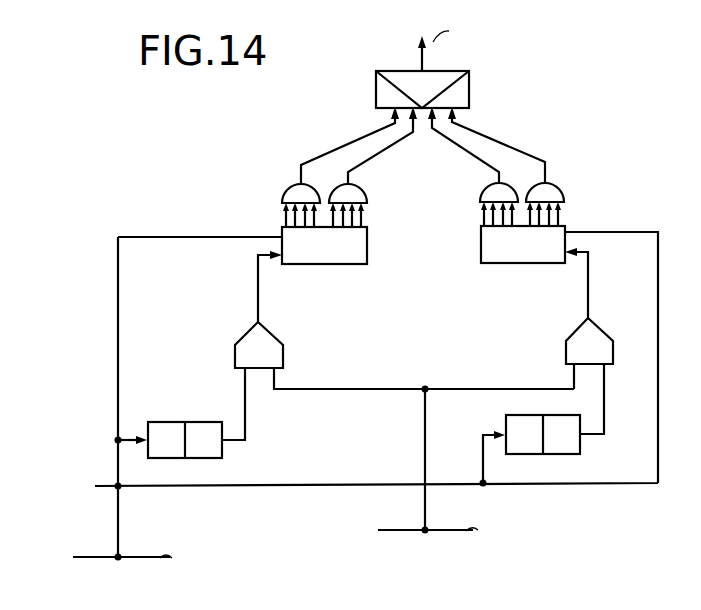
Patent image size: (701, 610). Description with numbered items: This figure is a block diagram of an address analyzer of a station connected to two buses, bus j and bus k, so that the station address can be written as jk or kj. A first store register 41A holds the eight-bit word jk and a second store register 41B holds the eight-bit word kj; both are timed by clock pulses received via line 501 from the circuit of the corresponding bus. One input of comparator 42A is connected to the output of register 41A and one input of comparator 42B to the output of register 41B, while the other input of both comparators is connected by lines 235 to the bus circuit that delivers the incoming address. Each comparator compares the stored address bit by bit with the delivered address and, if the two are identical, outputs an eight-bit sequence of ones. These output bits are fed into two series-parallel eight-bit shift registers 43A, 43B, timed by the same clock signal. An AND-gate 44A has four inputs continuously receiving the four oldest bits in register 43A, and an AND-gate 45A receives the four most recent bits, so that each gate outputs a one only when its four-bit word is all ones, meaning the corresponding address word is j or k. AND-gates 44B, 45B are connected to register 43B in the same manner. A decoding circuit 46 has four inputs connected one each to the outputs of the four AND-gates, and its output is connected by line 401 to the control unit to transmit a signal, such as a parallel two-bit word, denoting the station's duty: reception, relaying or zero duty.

The line 401 is at (420, 54).
The decoding circuit 46 is at (470, 87).
The AND-gate 45A is at (281, 194).
The AND-gate 44A is at (368, 190).
The AND-gate 44B is at (479, 195).
The AND-gate 45B is at (566, 194).
The series-parallel 8-bit shift register 43A is at (368, 257).
The series-parallel 8-bit shift register 43B is at (480, 246).
The comparator 42A is at (272, 332).
The comparator 42B is at (578, 331).
The first store register 41A is at (186, 412).
The second store register 41B is at (581, 455).
The line 501 is at (120, 523).
The lines 235 is at (424, 502).